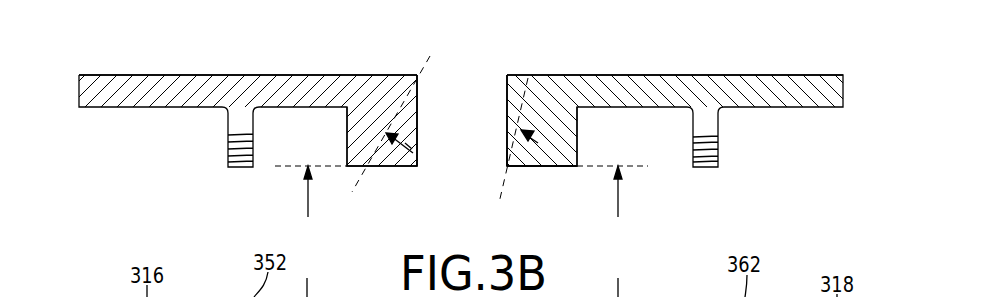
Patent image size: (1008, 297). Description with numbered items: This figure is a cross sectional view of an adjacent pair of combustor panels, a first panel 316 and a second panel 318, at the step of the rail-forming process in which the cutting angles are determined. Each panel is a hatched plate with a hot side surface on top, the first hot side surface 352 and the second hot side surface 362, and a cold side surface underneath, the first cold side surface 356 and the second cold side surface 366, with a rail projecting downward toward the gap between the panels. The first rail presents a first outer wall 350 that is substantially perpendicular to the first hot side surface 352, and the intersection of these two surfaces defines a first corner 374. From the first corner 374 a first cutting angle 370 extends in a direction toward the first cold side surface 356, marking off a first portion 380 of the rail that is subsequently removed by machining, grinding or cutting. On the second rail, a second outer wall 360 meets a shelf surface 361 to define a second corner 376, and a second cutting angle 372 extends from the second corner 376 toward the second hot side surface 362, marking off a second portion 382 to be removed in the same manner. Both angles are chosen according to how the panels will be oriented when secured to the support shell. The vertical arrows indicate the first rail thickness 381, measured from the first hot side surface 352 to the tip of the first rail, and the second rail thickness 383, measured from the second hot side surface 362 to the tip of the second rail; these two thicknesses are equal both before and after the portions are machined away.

The first panel 316 is at (103, 74).
The second panel 318 is at (798, 76).
The first hot side surface 352 is at (308, 75).
The second hot side surface 362 is at (618, 75).
The first cold side surface 356 is at (150, 108).
The second cold side surface 366 is at (750, 108).
The first corner 374 is at (417, 75).
The second outer wall 360 is at (506, 92).
The first outer wall 350 is at (418, 97).
The second portion 382 is at (511, 105).
The first portion 380 is at (402, 150).
The first cutting angle 370 is at (405, 143).
The second cutting angle 372 is at (538, 143).
The second corner 376 is at (507, 166).
The shelf surface 361 is at (562, 167).
The first rail thickness 381 is at (308, 200).
The second rail thickness 383 is at (618, 198).